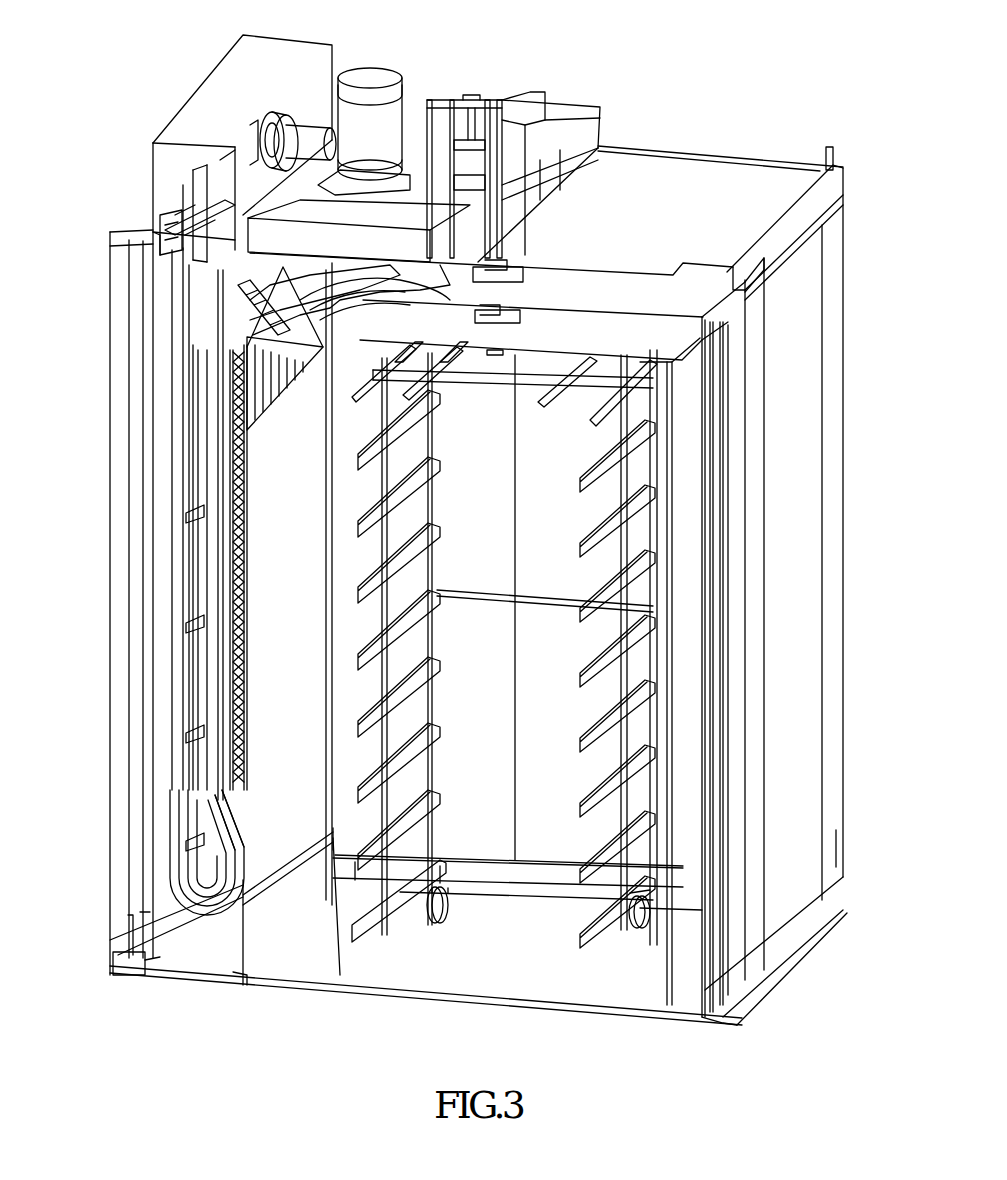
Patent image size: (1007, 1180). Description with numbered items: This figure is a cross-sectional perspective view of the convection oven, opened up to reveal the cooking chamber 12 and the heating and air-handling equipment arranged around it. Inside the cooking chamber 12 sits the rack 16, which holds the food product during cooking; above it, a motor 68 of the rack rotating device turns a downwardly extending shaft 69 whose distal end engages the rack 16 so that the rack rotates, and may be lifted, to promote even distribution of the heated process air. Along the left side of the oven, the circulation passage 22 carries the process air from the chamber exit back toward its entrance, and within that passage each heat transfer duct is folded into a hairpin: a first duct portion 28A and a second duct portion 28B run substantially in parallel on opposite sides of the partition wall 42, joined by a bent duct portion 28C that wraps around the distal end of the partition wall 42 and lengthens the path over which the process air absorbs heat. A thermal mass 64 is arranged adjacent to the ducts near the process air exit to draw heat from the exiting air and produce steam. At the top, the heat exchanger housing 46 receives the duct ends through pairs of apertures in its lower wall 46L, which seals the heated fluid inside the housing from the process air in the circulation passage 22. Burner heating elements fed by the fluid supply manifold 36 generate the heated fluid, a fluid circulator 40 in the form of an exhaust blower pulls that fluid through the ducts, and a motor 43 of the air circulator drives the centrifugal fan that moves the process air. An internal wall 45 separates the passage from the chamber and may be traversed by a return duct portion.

The cooking chamber 12 is at (495, 915).
The rack 16 is at (667, 905).
The circulation passage 22 is at (182, 912).
The first duct portion 28A is at (160, 432).
The second duct portion 28B is at (210, 570).
The bent duct portion 28C is at (200, 920).
The fluid supply manifold 36 is at (180, 185).
The fluid circulator 40 is at (318, 158).
The partition wall 42 is at (204, 728).
The motor 43 is at (385, 130).
The internal wall 45 is at (243, 338).
The heat exchanger housing 46 is at (196, 92).
The lower wall 46L is at (160, 230).
The thermal mass 64 is at (225, 706).
The motor 68 is at (490, 96).
The shaft 69 is at (560, 262).